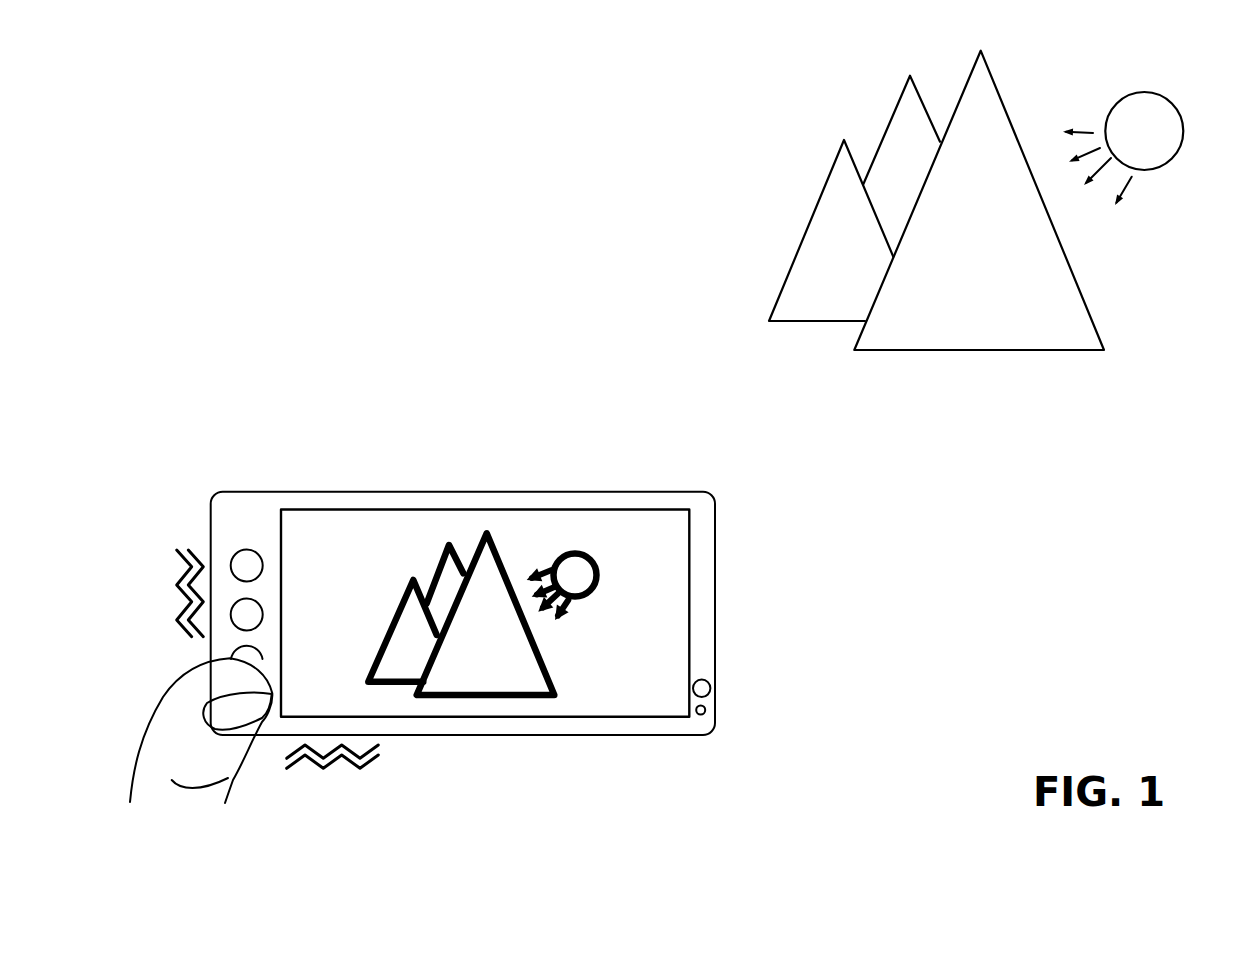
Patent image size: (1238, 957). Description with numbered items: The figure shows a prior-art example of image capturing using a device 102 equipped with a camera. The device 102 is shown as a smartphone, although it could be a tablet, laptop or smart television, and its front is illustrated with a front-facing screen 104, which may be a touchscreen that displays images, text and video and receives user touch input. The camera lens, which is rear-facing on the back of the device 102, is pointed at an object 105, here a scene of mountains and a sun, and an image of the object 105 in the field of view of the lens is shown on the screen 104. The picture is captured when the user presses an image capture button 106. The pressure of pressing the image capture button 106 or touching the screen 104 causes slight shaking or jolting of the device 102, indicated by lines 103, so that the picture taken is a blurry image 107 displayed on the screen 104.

The device 102 is at (715, 595).
The lines 103 is at (161, 585).
The screen 104 is at (689, 533).
The object 105 is at (803, 140).
The image capture button 106 is at (233, 648).
The blurry image 107 is at (406, 530).